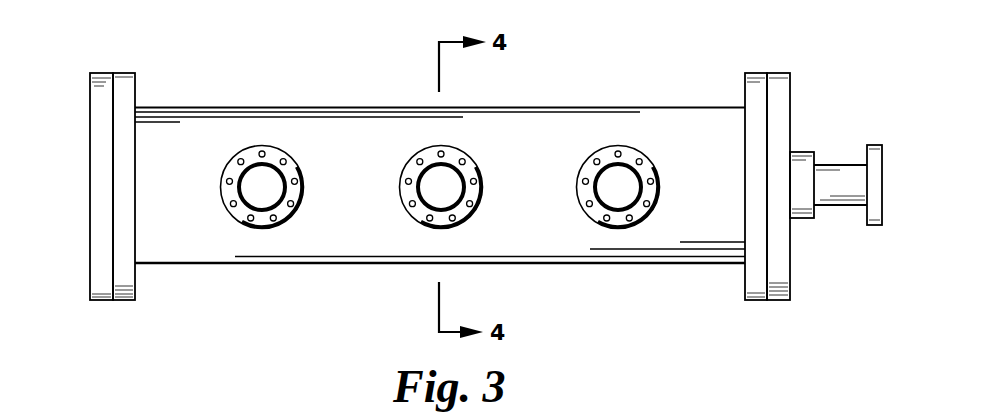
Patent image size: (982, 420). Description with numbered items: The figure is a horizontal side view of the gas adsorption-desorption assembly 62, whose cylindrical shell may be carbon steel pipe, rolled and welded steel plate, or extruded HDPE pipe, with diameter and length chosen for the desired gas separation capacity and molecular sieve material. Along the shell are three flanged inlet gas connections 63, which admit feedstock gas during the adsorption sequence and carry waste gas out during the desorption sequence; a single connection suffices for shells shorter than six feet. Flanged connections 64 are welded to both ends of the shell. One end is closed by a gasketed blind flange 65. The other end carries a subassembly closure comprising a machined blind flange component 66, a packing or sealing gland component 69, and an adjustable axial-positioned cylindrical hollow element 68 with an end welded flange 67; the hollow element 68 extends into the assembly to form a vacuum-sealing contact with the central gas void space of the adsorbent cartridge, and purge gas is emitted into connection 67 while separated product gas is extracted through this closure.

The adsorption-desorption assembly 62 is at (335, 107).
The flanged inlet gas connections 63 is at (227, 167).
The flanged connections 64 is at (135, 74).
The gasketed blind flange 65 is at (90, 74).
The machined blind flange component 66 is at (790, 74).
The end welded flange 67 is at (882, 158).
The adjustable axial-positioned cylindrical hollow element 68 is at (836, 165).
The packing or sealing gland component 69 is at (815, 219).